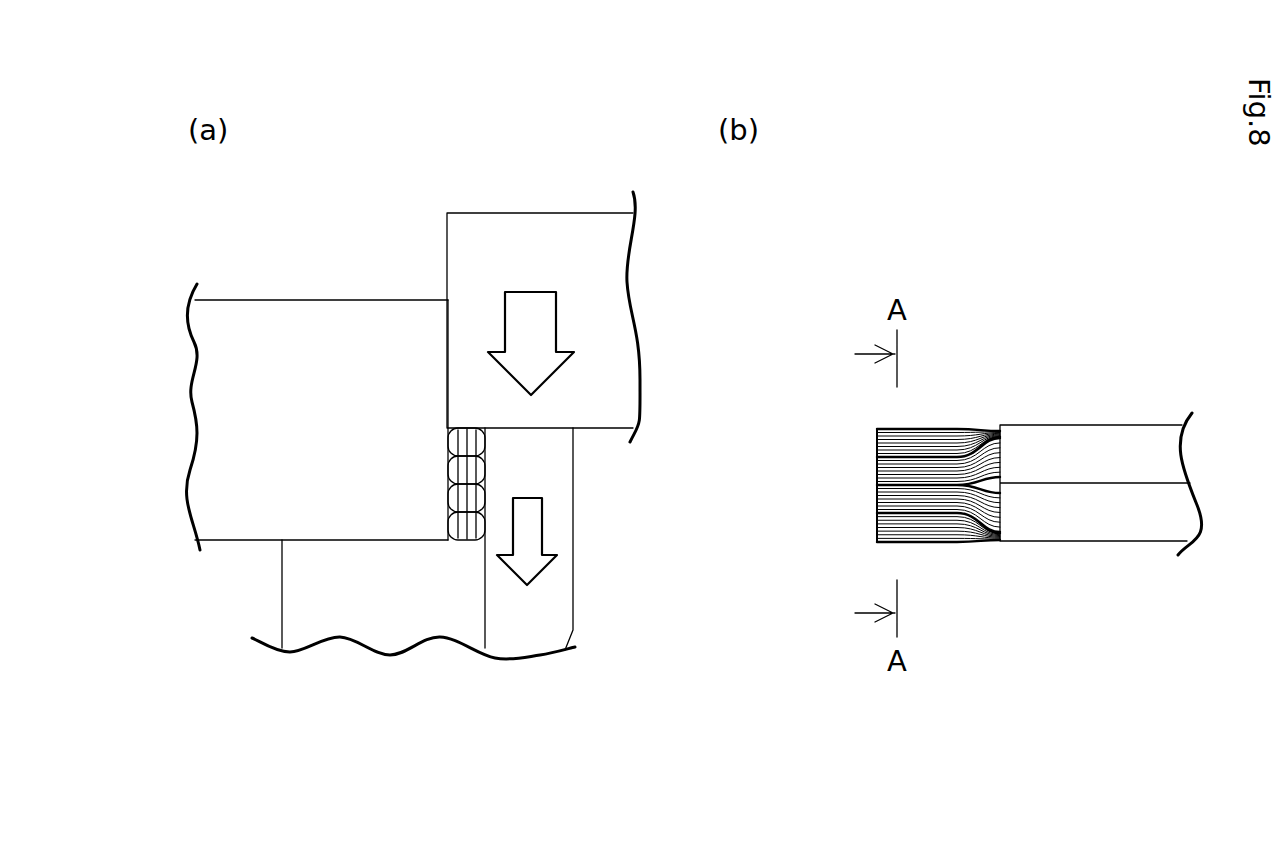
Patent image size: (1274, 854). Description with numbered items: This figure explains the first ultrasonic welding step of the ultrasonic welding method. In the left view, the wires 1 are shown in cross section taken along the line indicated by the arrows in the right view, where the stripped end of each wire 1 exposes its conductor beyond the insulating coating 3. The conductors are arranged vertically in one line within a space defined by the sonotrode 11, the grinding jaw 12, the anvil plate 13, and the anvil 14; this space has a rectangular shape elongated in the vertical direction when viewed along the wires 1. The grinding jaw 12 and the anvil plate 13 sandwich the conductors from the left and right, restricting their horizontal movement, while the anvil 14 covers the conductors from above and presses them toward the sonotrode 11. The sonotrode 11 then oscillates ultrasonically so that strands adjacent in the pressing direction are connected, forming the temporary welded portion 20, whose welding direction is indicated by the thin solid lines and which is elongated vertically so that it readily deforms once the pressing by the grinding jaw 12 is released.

The wire 1 is at (1102, 318).
The insulating coating 3 is at (1138, 443).
The sonotrode 11 is at (355, 637).
The grinding jaw 12 is at (237, 530).
The anvil plate 13 is at (565, 530).
The anvil 14 is at (460, 270).
The temporary welded portion 20 is at (523, 476).